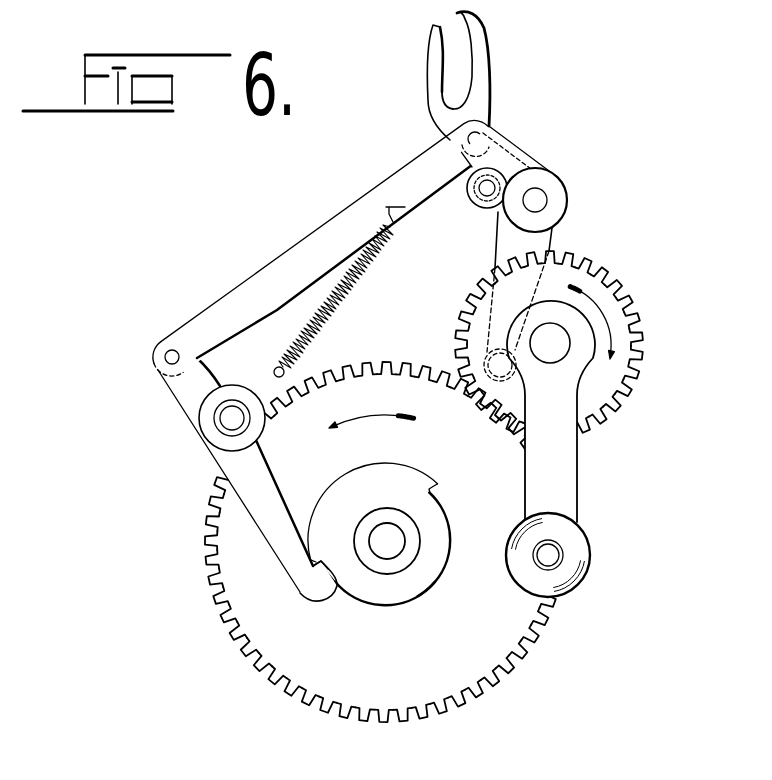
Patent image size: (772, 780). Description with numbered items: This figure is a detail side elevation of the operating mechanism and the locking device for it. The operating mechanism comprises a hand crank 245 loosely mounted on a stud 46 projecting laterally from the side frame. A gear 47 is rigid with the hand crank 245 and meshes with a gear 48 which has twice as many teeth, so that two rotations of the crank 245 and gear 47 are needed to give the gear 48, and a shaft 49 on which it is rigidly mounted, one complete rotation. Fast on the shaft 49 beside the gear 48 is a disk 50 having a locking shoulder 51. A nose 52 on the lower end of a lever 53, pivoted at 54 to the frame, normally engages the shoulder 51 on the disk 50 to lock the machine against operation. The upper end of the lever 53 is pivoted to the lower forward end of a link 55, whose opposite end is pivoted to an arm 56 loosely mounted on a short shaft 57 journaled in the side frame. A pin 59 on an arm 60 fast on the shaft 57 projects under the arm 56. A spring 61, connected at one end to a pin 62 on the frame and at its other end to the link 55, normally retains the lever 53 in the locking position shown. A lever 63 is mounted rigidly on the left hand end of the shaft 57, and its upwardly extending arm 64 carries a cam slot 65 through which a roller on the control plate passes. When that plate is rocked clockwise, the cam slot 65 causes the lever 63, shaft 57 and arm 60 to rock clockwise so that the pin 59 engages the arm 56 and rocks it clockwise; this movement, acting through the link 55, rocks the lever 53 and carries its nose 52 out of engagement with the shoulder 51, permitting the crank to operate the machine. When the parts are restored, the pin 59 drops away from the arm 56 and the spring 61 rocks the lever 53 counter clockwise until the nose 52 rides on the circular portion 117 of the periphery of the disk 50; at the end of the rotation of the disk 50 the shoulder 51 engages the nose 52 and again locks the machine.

The stud 46 is at (552, 352).
The gear 47 is at (617, 375).
The gear 48 is at (543, 627).
The shaft 49 is at (399, 542).
The disk 50 is at (434, 563).
The locking shoulder 51 is at (302, 597).
The nose 52 is at (328, 580).
The lever 53 is at (272, 533).
The pivot 54 is at (230, 422).
The link 55 is at (283, 289).
The arm 56 is at (516, 147).
The short shaft 57 is at (543, 200).
The pin 59 is at (484, 200).
The arm 60 is at (499, 210).
The spring 61 is at (350, 297).
The pin 62 is at (287, 372).
The lever 63 is at (481, 110).
The upwardly extending arm 64 is at (474, 22).
The cam slot 65 is at (473, 62).
The circular portion 117 is at (426, 595).
The hand crank 245 is at (564, 475).